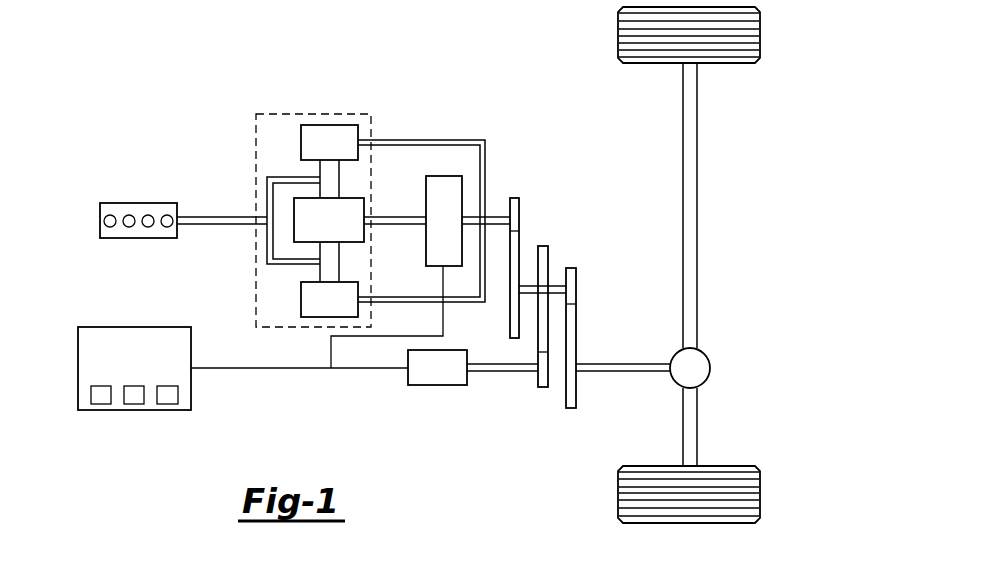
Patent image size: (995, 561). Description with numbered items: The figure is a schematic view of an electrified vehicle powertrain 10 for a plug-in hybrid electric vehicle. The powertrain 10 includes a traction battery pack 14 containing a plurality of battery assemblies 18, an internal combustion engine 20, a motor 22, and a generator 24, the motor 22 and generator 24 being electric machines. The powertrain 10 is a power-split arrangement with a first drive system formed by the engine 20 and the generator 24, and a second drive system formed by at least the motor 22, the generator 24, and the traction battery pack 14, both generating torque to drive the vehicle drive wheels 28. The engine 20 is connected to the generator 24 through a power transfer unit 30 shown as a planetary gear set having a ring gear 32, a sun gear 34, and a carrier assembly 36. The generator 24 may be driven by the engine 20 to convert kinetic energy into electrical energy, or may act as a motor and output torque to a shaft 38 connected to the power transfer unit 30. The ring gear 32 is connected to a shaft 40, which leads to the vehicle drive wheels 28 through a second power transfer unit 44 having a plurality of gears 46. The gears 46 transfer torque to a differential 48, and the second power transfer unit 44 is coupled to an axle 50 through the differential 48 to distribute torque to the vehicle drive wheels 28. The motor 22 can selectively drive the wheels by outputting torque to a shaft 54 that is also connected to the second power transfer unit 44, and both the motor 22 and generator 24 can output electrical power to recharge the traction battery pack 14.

The powertrain 10 is at (164, 84).
The traction battery pack 14 is at (243, 364).
The battery assemblies 18 is at (134, 404).
The internal combustion engine 20 is at (100, 203).
The motor 22 is at (438, 385).
The generator 24 is at (462, 187).
The vehicle drive wheels 28 is at (760, 33).
The power transfer unit 30 is at (371, 114).
The ring gear 32 is at (301, 142).
The sun gear 34 is at (350, 242).
The carrier assembly 36 is at (267, 200).
The shaft 38 is at (398, 217).
The shaft 40 is at (500, 227).
The second power transfer unit 44 is at (587, 299).
The gears 46 is at (519, 213).
The differential 48 is at (710, 368).
The axle 50 is at (697, 207).
The shaft 54 is at (503, 372).